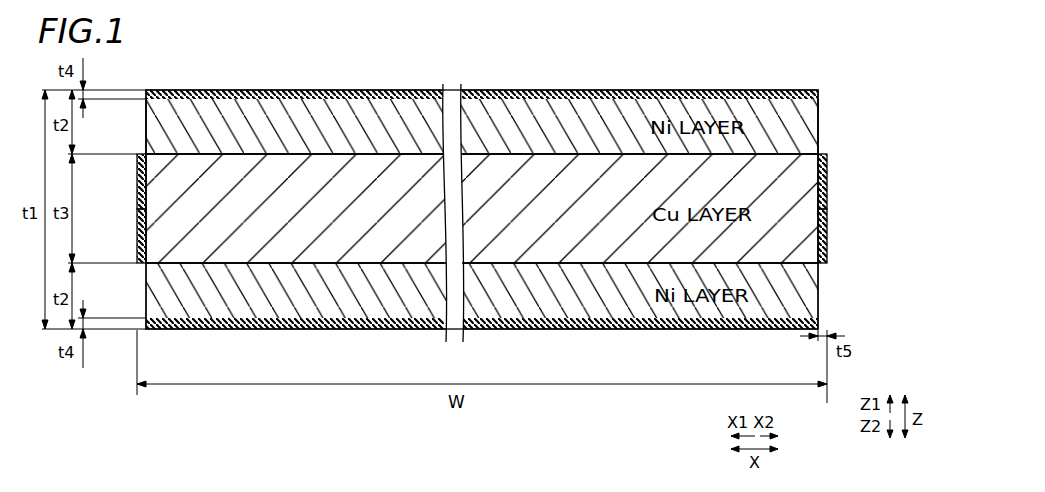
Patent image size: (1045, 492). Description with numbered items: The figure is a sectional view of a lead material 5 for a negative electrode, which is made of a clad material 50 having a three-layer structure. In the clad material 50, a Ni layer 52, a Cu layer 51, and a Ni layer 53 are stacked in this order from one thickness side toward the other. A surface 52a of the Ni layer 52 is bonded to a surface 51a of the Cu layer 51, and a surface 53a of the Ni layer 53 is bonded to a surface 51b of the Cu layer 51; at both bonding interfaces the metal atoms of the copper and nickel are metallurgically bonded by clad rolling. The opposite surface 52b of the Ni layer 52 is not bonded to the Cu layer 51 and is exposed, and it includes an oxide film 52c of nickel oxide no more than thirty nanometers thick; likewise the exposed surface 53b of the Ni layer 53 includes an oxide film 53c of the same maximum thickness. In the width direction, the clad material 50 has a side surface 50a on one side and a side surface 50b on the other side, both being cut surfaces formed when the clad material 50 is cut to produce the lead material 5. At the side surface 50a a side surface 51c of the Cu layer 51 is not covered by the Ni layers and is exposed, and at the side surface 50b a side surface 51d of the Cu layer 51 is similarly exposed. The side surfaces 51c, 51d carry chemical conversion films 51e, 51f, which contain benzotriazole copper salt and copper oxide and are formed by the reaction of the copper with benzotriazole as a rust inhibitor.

The lead material for a negative electrode 5 is at (803, 81).
The clad material 50 is at (903, 120).
The side surface of the clad material 50a is at (146, 143).
The side surface of the clad material 50b is at (827, 108).
The Cu layer 51 is at (808, 207).
The surface of the Cu layer 51a is at (626, 153).
The surface of the Cu layer 51b is at (617, 264).
The side surface of the Cu layer 51c is at (137, 170).
The side surface of the Cu layer 51d is at (829, 172).
The chemical conversion film 51e is at (137, 210).
The chemical conversion film 51f is at (829, 238).
The Ni layer 52 is at (806, 127).
The surface of the Ni layer 52a is at (367, 155).
The surface of the Ni layer 52b is at (565, 95).
The oxide film 52c is at (285, 95).
The Ni layer 53 is at (806, 291).
The surface of the Ni layer 53a is at (412, 262).
The surface of the Ni layer 53b is at (558, 329).
The oxide film 53c is at (277, 329).